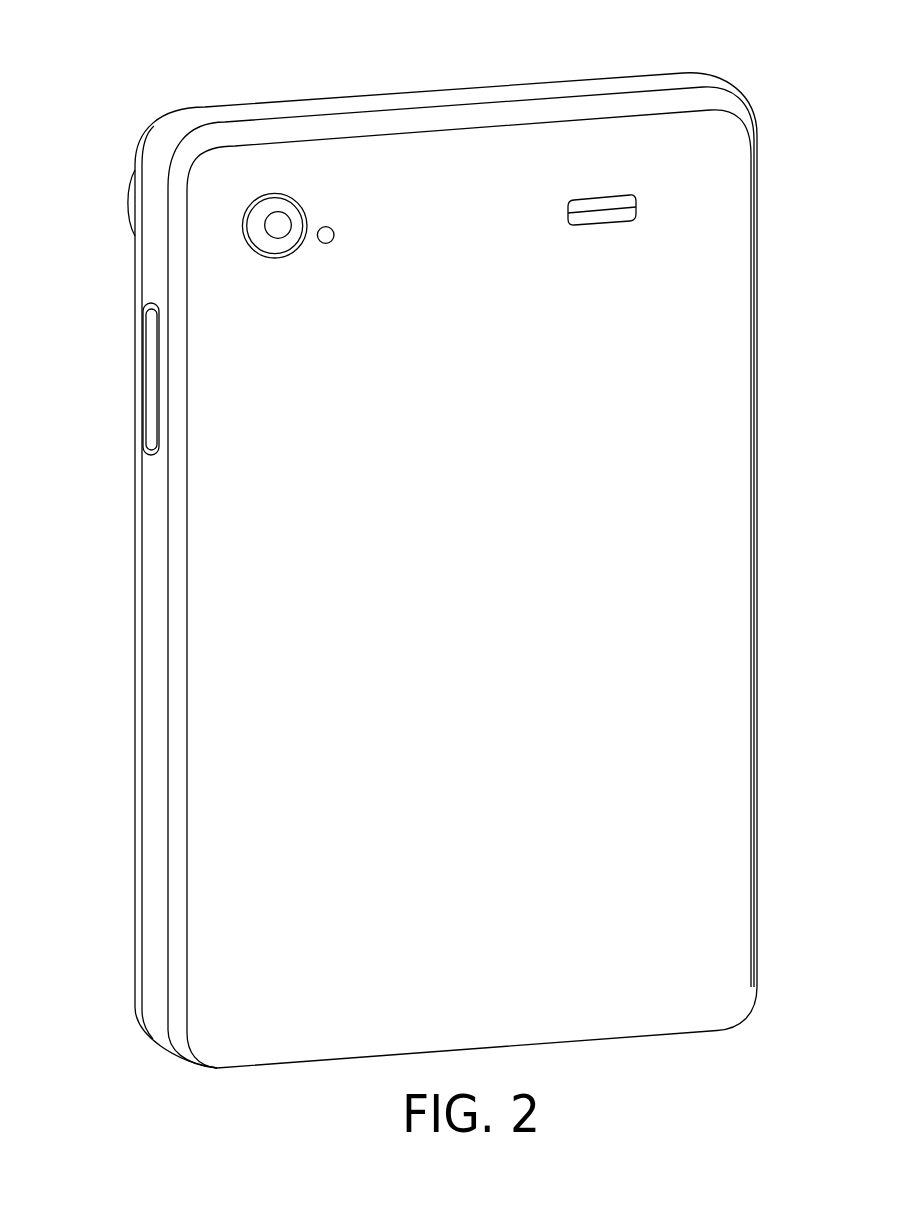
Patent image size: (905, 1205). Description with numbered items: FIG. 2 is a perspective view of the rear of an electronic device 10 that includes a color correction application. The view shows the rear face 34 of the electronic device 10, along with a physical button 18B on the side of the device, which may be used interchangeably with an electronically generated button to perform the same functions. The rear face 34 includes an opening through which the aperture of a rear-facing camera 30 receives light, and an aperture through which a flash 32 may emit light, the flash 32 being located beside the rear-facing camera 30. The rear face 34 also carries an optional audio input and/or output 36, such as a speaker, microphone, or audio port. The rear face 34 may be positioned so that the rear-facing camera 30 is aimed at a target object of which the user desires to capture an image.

The electronic device 10 is at (728, 63).
The physical button 18B is at (140, 368).
The rear-facing camera 30 is at (274, 193).
The flash 32 is at (325, 225).
The rear face 34 is at (640, 586).
The audio input and/or output 36 is at (640, 206).